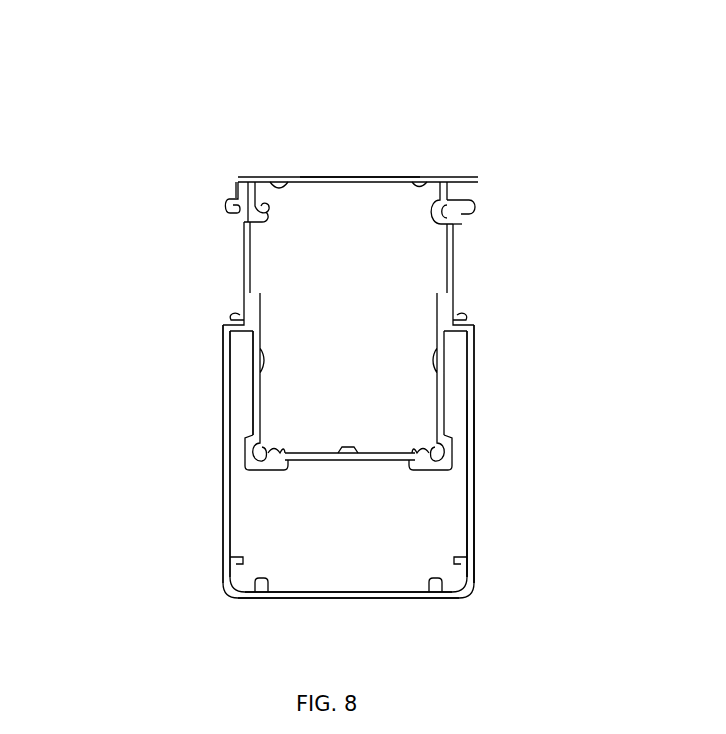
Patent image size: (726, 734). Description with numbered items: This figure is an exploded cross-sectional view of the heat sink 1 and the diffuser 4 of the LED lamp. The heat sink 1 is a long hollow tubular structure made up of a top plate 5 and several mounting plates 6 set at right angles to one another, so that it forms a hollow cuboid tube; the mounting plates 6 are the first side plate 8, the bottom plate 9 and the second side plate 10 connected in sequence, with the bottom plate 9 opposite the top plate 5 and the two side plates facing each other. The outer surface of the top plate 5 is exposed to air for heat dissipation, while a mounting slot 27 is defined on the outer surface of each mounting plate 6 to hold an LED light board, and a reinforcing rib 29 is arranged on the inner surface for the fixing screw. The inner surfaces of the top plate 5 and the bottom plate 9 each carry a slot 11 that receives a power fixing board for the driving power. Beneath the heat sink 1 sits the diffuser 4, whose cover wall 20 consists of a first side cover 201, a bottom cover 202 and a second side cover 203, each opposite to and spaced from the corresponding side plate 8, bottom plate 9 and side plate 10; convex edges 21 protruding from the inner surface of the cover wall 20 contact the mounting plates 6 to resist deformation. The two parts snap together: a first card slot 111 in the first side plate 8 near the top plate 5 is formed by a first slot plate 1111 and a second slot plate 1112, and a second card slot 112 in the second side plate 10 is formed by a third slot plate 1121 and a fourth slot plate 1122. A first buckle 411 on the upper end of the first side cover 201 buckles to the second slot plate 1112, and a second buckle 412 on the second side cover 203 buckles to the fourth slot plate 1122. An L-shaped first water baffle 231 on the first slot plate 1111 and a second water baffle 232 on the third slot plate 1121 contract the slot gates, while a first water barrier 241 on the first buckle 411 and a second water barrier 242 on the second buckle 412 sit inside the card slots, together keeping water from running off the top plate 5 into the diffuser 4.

The heat sink 1 is at (382, 177).
The top plate 5 is at (365, 177).
The first card slot 111 is at (448, 212).
The first slot plate 1111 is at (445, 210).
The second slot plate 1112 is at (457, 218).
The second card slot 112 is at (252, 208).
The third slot plate 1121 is at (243, 178).
The fourth slot plate 1122 is at (260, 210).
The first water baffle 231 is at (468, 206).
The second water baffle 232 is at (228, 200).
The mounting slot 27 is at (246, 300).
The first side plate 8 is at (455, 300).
The second water barrier 242 is at (243, 322).
The second buckle 412 is at (228, 322).
The second side plate 10 is at (253, 340).
The first water barrier 241 is at (460, 318).
The first buckle 411 is at (450, 323).
The mounting plate 6 is at (314, 453).
The slot 11 is at (443, 205).
The bottom plate 9 is at (372, 456).
The reinforcing rib 29 is at (347, 452).
The cover wall 20 is at (225, 490).
The second side cover 203 is at (225, 430).
The convex edge 21 is at (232, 560).
The diffuser 4 is at (476, 480).
The first side cover 201 is at (475, 512).
The bottom cover 202 is at (391, 597).